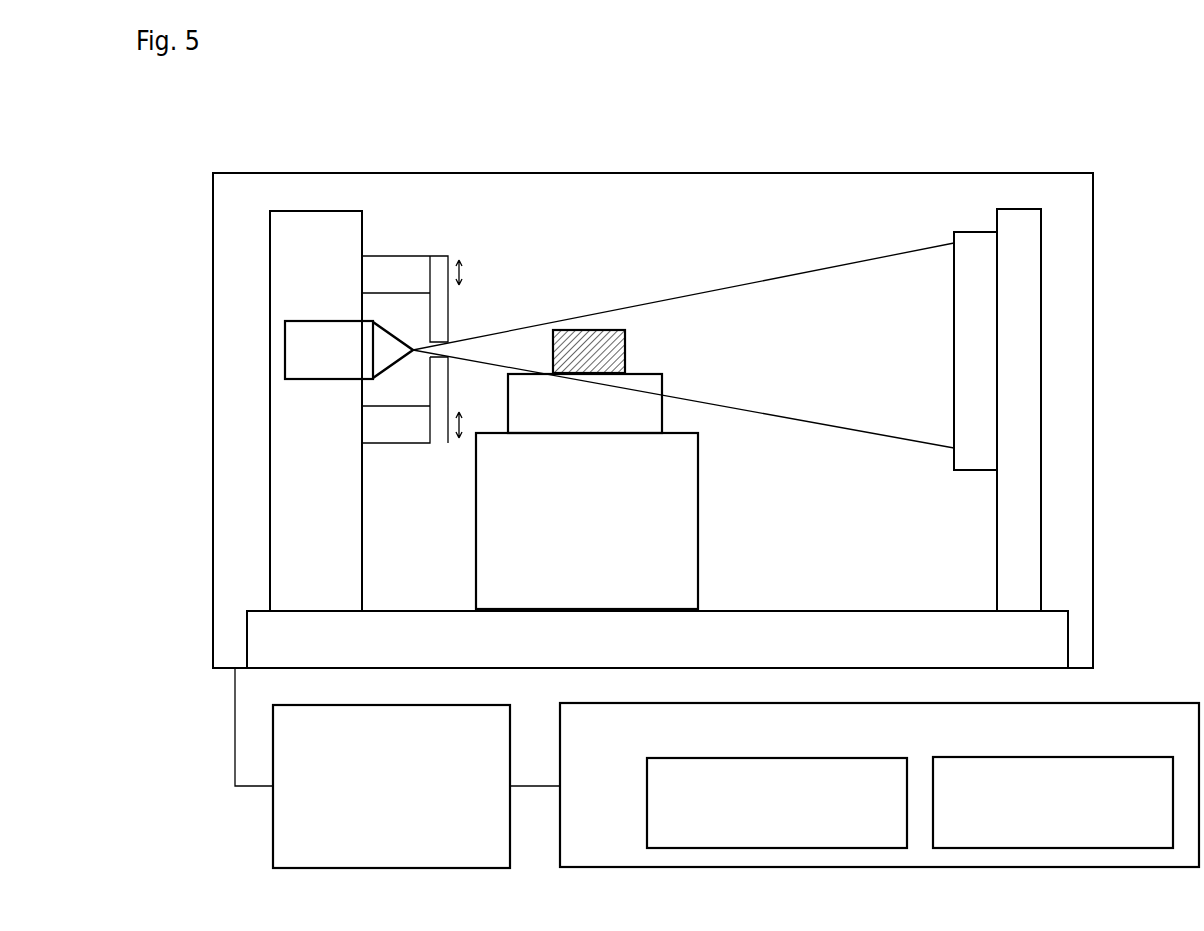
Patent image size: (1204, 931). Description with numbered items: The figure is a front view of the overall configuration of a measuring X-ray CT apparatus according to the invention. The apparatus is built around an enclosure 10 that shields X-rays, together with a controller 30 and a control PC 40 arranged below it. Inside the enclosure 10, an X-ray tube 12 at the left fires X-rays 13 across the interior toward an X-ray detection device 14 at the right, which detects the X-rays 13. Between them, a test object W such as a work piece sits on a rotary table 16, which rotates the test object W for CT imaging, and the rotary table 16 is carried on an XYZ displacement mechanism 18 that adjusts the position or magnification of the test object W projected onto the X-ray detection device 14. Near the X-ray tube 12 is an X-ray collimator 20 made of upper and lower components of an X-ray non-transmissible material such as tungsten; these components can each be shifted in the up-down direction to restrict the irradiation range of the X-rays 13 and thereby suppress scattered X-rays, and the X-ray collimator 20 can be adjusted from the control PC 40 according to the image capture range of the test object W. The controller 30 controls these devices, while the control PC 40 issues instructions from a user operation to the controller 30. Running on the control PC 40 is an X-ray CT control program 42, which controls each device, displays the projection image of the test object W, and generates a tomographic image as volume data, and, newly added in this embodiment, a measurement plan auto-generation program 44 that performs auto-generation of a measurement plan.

The enclosure 10 is at (235, 173).
The X-ray tube 12 is at (297, 320).
The X-rays 13 is at (762, 280).
The X-ray detection device 14 is at (984, 248).
The rotary table 16 is at (662, 388).
The XYZ displacement mechanism 18 is at (698, 518).
The X-ray collimator 20 is at (448, 404).
The test object W is at (607, 353).
The controller 30 is at (375, 707).
The control PC 40 is at (595, 703).
The X-ray CT control program 42 is at (737, 758).
The measurement plan auto-generation program 44 is at (1020, 757).